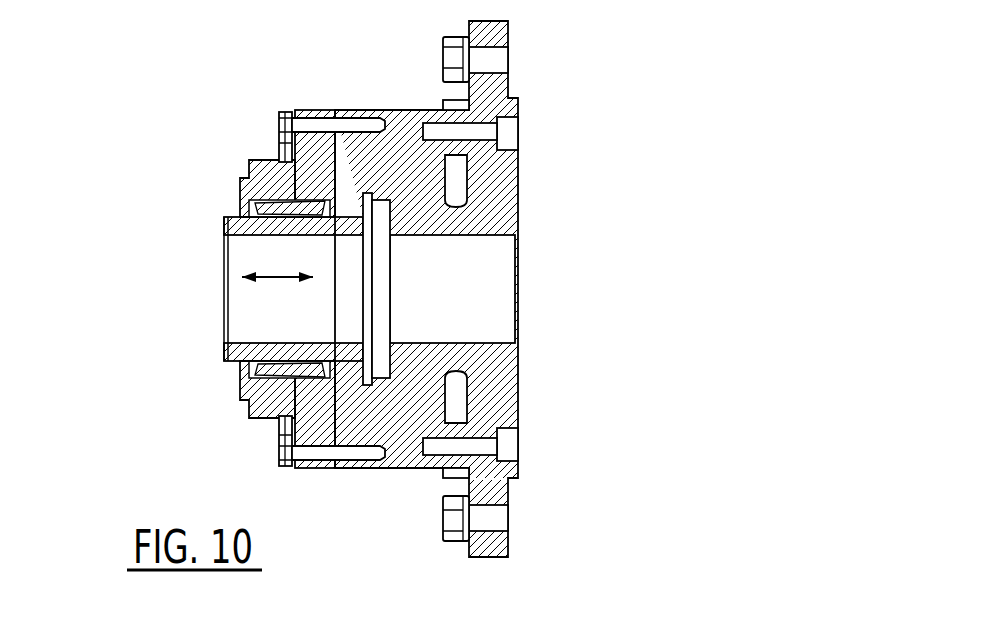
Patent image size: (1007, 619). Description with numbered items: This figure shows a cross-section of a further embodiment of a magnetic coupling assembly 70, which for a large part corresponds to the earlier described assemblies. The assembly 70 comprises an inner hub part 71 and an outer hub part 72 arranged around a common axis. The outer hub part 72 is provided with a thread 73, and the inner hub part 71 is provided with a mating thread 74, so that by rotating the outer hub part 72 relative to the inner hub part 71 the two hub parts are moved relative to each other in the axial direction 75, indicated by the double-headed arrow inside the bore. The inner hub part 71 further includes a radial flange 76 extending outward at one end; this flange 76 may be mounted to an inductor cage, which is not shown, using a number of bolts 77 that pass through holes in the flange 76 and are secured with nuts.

The magnetic coupling assembly 70 is at (203, 447).
The inner hub part 71 is at (503, 203).
The outer hub part 72 is at (232, 355).
The thread 73 is at (420, 375).
The thread 74 is at (440, 376).
The axial direction 75 is at (275, 277).
The radial flange 76 is at (502, 38).
The bolts 77 is at (452, 50).